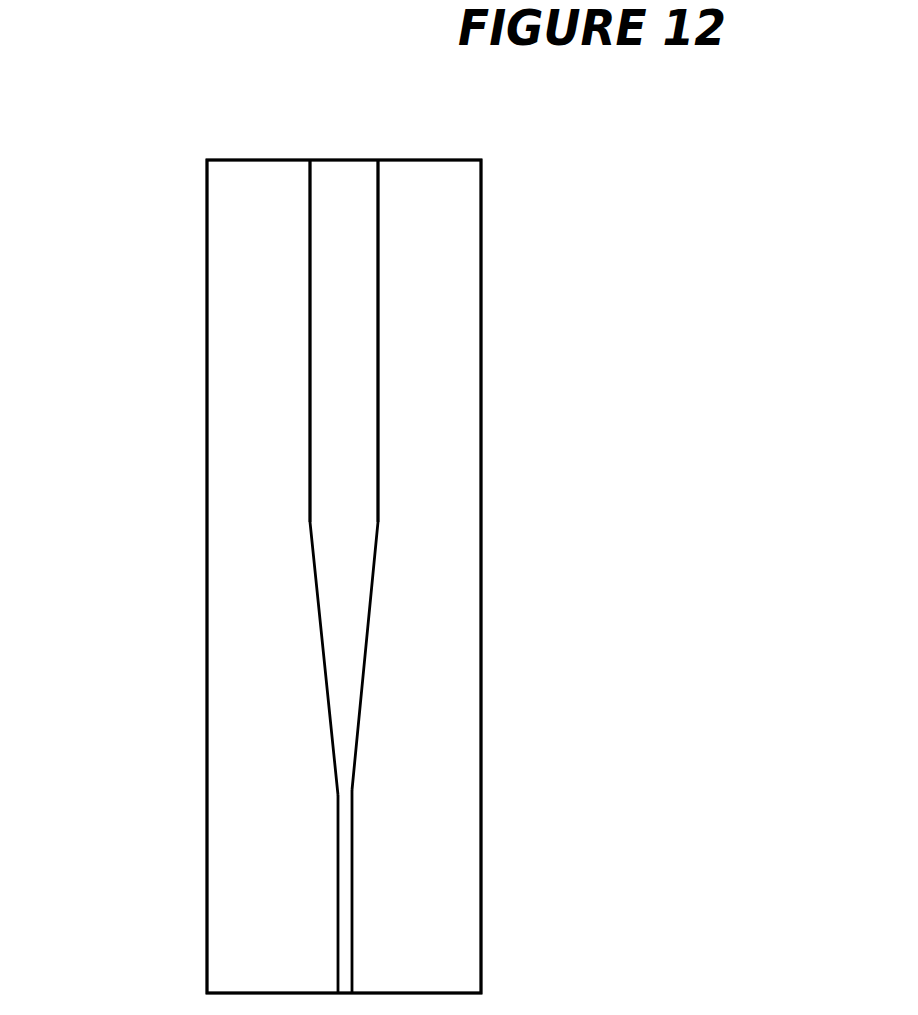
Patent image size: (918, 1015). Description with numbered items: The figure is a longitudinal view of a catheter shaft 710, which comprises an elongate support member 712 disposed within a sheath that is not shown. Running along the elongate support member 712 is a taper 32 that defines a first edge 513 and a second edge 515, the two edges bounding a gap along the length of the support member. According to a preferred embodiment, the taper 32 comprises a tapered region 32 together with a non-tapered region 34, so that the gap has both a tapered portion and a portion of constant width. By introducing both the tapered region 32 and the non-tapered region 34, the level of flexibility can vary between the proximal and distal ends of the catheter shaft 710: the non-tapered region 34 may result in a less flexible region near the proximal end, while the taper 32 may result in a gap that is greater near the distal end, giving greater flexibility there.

The catheter shaft 710 is at (592, 567).
The elongate support member 712 is at (247, 549).
The first edge 513 is at (310, 179).
The second edge 515 is at (378, 201).
The taper 32 is at (342, 292).
The non-tapered region 34 is at (340, 913).